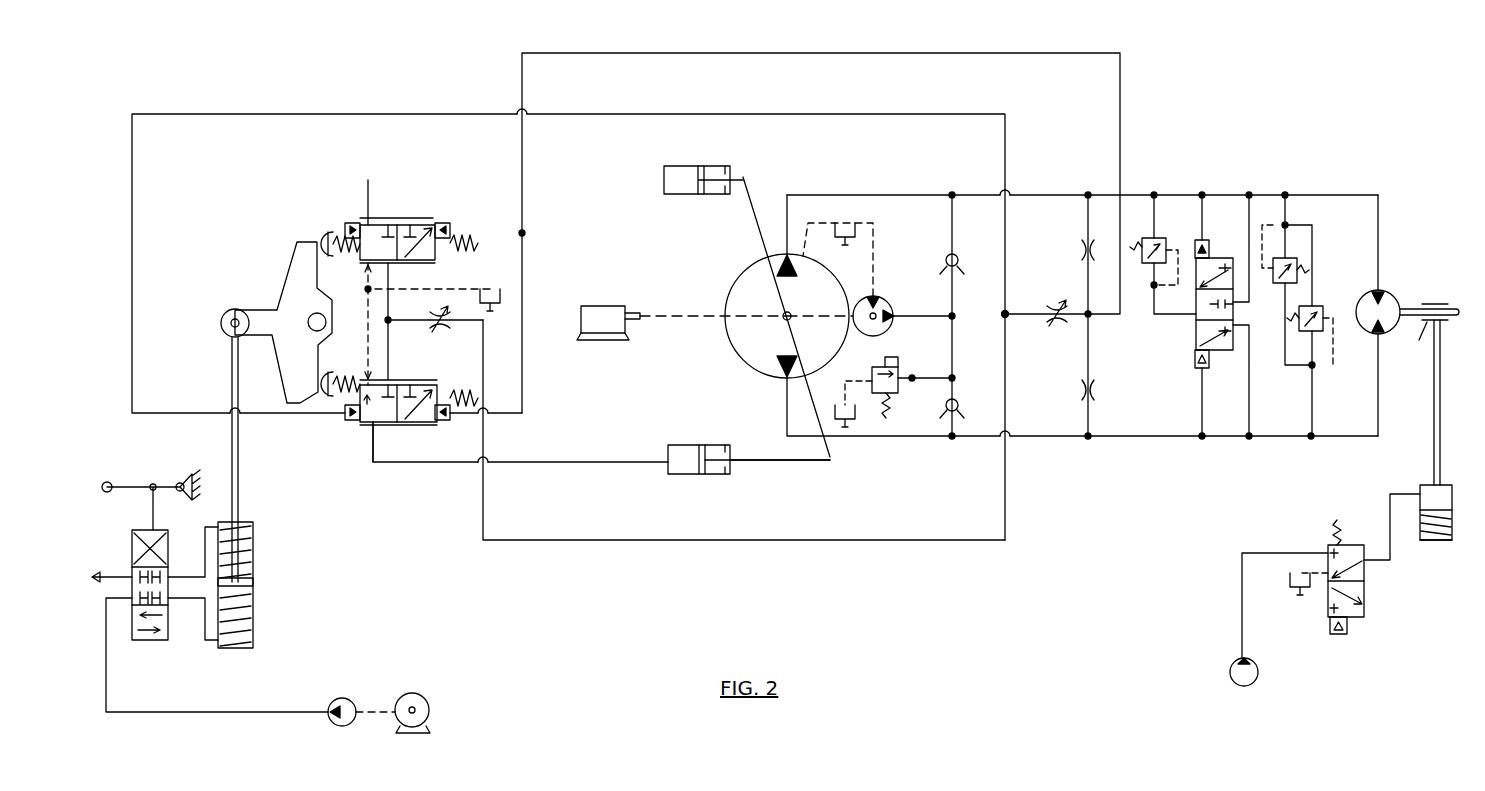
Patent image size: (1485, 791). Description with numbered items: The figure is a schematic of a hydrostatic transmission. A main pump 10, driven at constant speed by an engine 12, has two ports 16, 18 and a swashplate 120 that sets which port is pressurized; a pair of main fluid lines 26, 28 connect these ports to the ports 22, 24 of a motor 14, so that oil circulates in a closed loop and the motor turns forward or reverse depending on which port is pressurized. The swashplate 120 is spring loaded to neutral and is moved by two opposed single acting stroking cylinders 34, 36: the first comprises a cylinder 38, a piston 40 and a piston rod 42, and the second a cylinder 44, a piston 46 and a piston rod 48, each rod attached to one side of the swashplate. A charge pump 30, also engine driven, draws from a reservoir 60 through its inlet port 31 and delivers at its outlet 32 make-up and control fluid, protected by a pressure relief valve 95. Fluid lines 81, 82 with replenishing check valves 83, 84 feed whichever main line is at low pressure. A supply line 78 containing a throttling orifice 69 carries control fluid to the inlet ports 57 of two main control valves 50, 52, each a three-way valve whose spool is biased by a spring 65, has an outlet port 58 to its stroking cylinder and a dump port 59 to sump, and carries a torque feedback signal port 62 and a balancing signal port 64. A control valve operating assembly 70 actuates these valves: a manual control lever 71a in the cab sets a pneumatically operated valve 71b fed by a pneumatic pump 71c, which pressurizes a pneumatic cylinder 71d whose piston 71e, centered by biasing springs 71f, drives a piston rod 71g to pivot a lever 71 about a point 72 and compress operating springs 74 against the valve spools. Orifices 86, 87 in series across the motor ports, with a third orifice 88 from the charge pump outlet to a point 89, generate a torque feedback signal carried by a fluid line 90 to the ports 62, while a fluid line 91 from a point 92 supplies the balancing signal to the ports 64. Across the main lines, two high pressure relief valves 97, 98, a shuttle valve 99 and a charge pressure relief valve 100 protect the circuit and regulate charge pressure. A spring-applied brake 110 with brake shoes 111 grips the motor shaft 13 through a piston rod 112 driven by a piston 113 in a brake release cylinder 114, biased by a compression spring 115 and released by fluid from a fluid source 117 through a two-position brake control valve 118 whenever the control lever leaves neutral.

The main pump 10 is at (728, 290).
The engine 12 is at (615, 300).
The shaft 13 is at (1410, 308).
The motor 14 is at (1360, 302).
The pump port 16 is at (778, 368).
The pump port 18 is at (790, 275).
The motor port 22 is at (1375, 332).
The motor port 24 is at (1384, 295).
The main fluid line 26 is at (1060, 436).
The main fluid line 28 is at (1066, 195).
The charge pump 30 is at (883, 335).
The fluid inlet port 31 is at (878, 300).
The fluid outlet 32 is at (895, 314).
The stroking cylinder 34 is at (665, 433).
The stroking cylinder 36 is at (664, 205).
The cylinder 38 is at (727, 445).
The piston 40 is at (702, 445).
The piston rod 42 is at (748, 460).
The cylinder 44 is at (668, 166).
The piston 46 is at (703, 166).
The piston rod 48 is at (742, 176).
The main control valve 50 is at (360, 455).
The main control valve 52 is at (343, 204).
The fluid inlet port 57 is at (392, 268).
The fluid outlet port 58 is at (365, 215).
The dump port 59 is at (366, 280).
The reservoir 60 is at (895, 425).
The torque feedback signal port 62 is at (448, 224).
The balancing signal port 64 is at (345, 230).
The spring 65 is at (469, 250).
The adjustable flow control valve 69 is at (444, 325).
The control valve operating assembly 70 is at (250, 283).
The lever 71 is at (262, 338).
The control lever 71a is at (115, 480).
The pneumatically operated valve 71b is at (153, 640).
The pneumatic pump 71c is at (342, 698).
The pneumatic cylinder 71d is at (255, 608).
The piston 71e is at (255, 585).
The biasing springs 71f is at (255, 548).
The piston rod 71g is at (240, 472).
The pivot point 72 is at (311, 315).
The operating spring 74 is at (345, 252).
The fluid supply line 78 is at (720, 540).
The fluid line 81 is at (952, 345).
The fluid line 82 is at (952, 225).
The replenishing check valve 83 is at (959, 401).
The replenishing check valve 84 is at (958, 256).
The flow control orifice 86 is at (1080, 390).
The flow control orifice 87 is at (1082, 250).
The flow control orifice 88 is at (1060, 322).
The point 89 is at (1092, 314).
The fluid line 90 is at (1057, 53).
The fluid line 91 is at (430, 114).
The point 92 is at (1007, 310).
The pressure relief valve 95 is at (898, 398).
The high pressure relief valve 97 is at (1315, 306).
The high pressure relief valve 98 is at (1282, 285).
The shuttle valve 99 is at (1218, 258).
The charge pressure relief valve 100 is at (1162, 238).
The brake 110 is at (1373, 514).
The brake shoes 111 is at (1437, 302).
The piston rod 112 is at (1434, 428).
The piston 113 is at (1420, 528).
The brake release cylinder 114 is at (1420, 487).
The compression spring 115 is at (1438, 541).
The fluid source 117 is at (1258, 679).
The brake control valve 118 is at (1364, 610).
The swashplate 120 is at (760, 228).